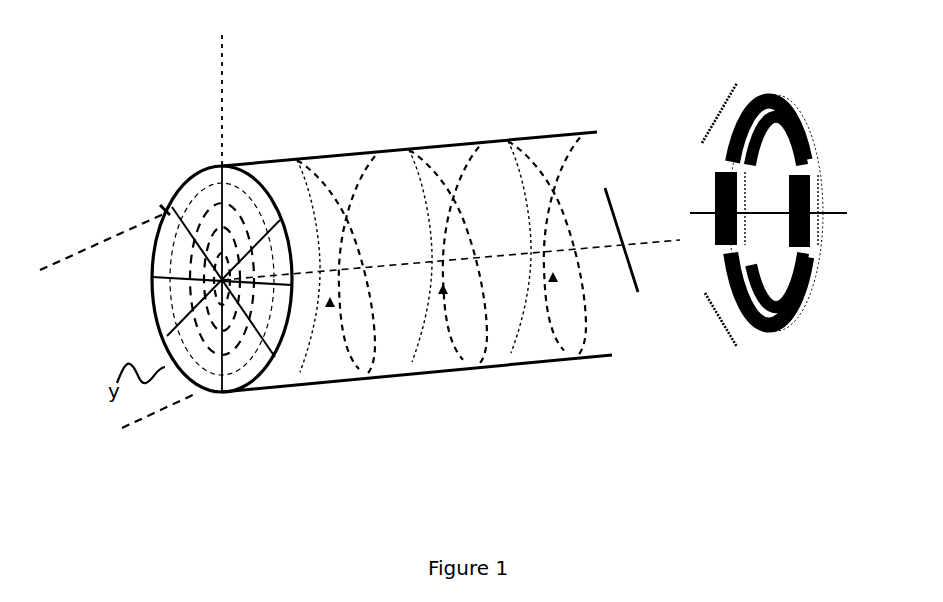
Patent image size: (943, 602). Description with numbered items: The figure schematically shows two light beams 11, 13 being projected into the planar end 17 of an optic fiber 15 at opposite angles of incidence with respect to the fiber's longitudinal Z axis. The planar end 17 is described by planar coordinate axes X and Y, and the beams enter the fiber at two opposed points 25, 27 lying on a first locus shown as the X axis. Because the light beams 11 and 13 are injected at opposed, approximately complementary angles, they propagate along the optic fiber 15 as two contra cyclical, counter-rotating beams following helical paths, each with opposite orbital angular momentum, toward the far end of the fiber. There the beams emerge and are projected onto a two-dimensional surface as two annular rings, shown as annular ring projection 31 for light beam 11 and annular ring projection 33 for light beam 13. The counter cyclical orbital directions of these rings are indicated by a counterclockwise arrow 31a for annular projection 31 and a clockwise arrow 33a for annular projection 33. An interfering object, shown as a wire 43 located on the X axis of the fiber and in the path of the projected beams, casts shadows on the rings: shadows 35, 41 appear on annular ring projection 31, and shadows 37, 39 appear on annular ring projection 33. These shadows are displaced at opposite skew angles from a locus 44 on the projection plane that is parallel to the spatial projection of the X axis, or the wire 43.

The light beam 11 is at (796, 396).
The light beam 13 is at (388, 185).
The optic fiber 15 is at (451, 143).
The planar end 17 is at (152, 300).
The point 25 is at (163, 210).
The point 27 is at (280, 363).
The annular ring projection 31 is at (760, 97).
The counterclockwise arrow 31a is at (703, 120).
The annular ring projection 33 is at (808, 124).
The clockwise arrow 33a is at (737, 340).
The shadow 35 is at (715, 251).
The shadow 37 is at (717, 166).
The shadow 39 is at (822, 252).
The shadow 41 is at (815, 170).
The wire 43 is at (612, 188).
The locus 44 is at (833, 213).